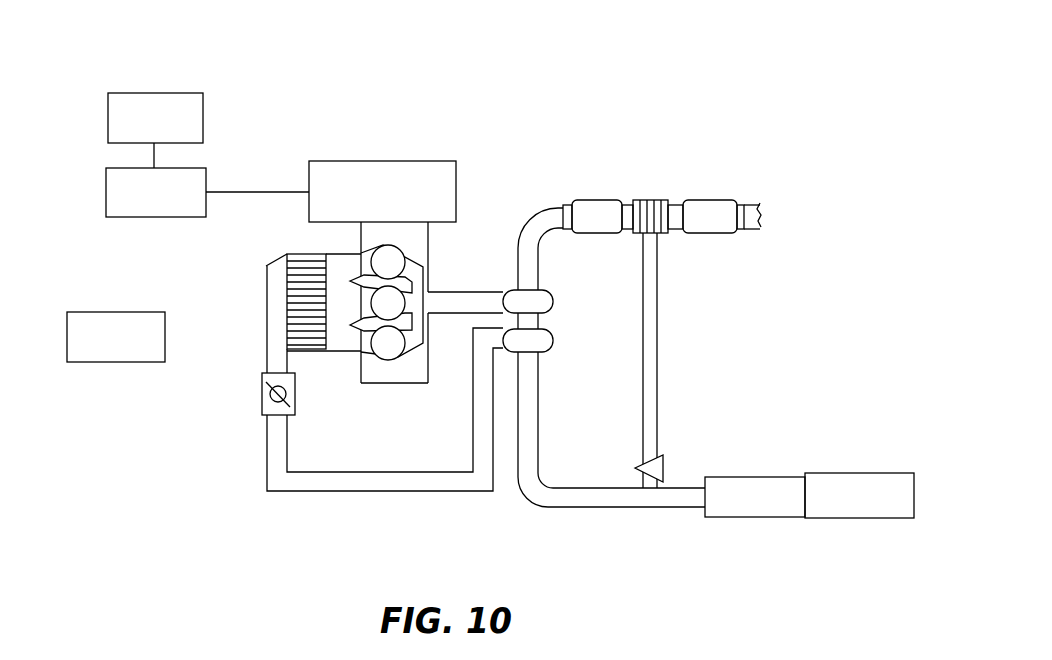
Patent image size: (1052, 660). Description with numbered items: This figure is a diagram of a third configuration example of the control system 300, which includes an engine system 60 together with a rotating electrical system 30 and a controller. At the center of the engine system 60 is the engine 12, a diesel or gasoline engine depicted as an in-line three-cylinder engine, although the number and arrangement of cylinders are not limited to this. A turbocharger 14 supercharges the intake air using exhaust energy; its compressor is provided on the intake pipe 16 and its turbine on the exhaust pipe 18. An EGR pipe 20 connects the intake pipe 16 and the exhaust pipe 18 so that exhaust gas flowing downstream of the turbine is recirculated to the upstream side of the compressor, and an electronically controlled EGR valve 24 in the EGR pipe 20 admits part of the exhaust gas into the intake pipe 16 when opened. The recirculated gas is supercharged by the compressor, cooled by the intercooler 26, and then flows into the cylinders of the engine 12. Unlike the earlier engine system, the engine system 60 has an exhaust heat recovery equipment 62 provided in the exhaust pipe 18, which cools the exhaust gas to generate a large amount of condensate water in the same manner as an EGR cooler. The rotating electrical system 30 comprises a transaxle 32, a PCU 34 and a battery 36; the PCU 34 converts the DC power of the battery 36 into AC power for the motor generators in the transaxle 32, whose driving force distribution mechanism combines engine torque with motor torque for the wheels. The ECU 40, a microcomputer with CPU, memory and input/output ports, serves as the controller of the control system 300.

The engine 12 is at (375, 391).
The turbocharger 14 is at (561, 322).
The intake pipe 16 is at (389, 491).
The exhaust pipe 18 is at (490, 292).
The EGR pipe 20 is at (657, 280).
The EGR valve 24 is at (663, 458).
The intercooler 26 is at (288, 320).
The rotating electrical system 30 is at (258, 150).
The transaxle 32 is at (408, 161).
The PCU 34 is at (106, 185).
The battery 36 is at (108, 100).
The ECU 40 is at (67, 330).
The engine system 60 is at (208, 481).
The exhaust heat recovery equipment 62 is at (645, 200).
The control system 300 is at (727, 120).